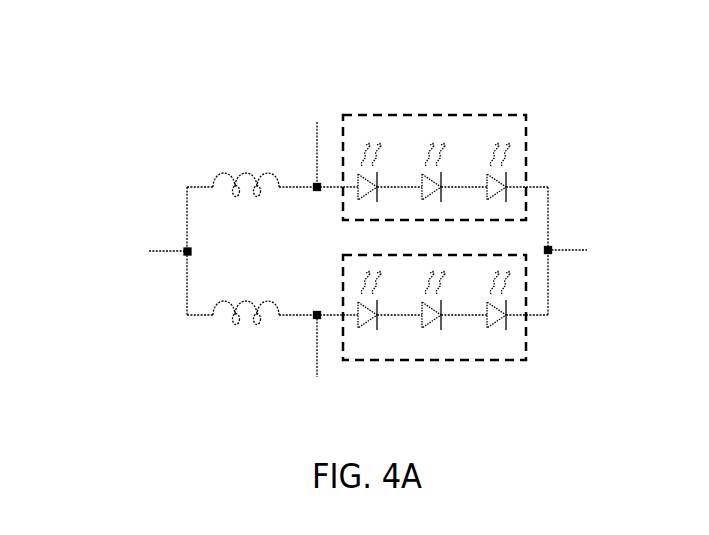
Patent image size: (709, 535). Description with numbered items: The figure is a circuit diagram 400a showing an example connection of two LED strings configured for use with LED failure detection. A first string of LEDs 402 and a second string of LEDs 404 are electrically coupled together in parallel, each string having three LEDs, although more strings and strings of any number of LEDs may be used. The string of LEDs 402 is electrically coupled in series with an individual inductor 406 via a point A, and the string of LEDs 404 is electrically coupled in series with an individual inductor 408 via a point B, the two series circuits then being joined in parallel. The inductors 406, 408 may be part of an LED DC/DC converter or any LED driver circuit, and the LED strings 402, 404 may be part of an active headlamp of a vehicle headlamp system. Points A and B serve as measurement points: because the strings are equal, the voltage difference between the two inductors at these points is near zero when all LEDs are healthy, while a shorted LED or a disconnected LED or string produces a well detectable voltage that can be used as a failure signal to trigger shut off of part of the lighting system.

The circuit diagram 400a is at (409, 239).
The string of LEDs 402 is at (432, 115).
The string of LEDs 404 is at (435, 360).
The inductor 406 is at (232, 135).
The inductor 408 is at (235, 333).